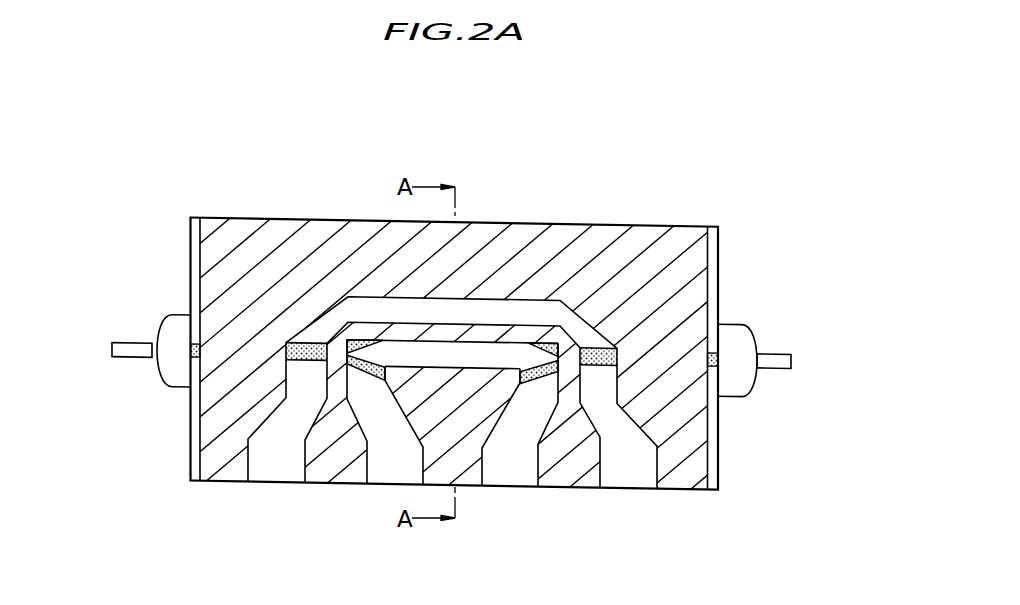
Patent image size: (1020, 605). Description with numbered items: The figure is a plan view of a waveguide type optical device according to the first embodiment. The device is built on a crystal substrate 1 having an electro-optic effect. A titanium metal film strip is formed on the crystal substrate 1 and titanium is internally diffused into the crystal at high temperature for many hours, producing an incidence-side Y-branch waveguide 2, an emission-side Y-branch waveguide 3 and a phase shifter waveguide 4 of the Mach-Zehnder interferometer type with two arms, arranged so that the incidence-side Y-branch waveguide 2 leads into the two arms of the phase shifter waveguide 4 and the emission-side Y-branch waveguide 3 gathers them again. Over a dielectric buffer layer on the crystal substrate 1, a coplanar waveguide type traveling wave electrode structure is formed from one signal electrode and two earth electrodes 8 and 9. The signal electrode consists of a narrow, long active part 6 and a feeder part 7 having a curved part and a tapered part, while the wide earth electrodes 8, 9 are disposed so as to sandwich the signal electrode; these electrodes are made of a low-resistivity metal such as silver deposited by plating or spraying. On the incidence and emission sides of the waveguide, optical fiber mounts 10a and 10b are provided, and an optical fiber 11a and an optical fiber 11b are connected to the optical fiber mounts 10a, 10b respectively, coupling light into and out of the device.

The crystal substrate 1 is at (190, 247).
The incidence-side Y-branch waveguide 2 is at (300, 345).
The emission-side Y-branch waveguide 3 is at (636, 343).
The phase shifter waveguide 4 is at (480, 372).
The active part 6 is at (407, 340).
The feeder part 7 is at (334, 485).
The earth electrode 8 is at (466, 447).
The earth electrode 9 is at (598, 243).
The optical fiber mount 10a is at (175, 388).
The optical fiber mount 10b is at (745, 393).
The optical fiber 11a is at (124, 345).
The optical fiber 11b is at (780, 353).